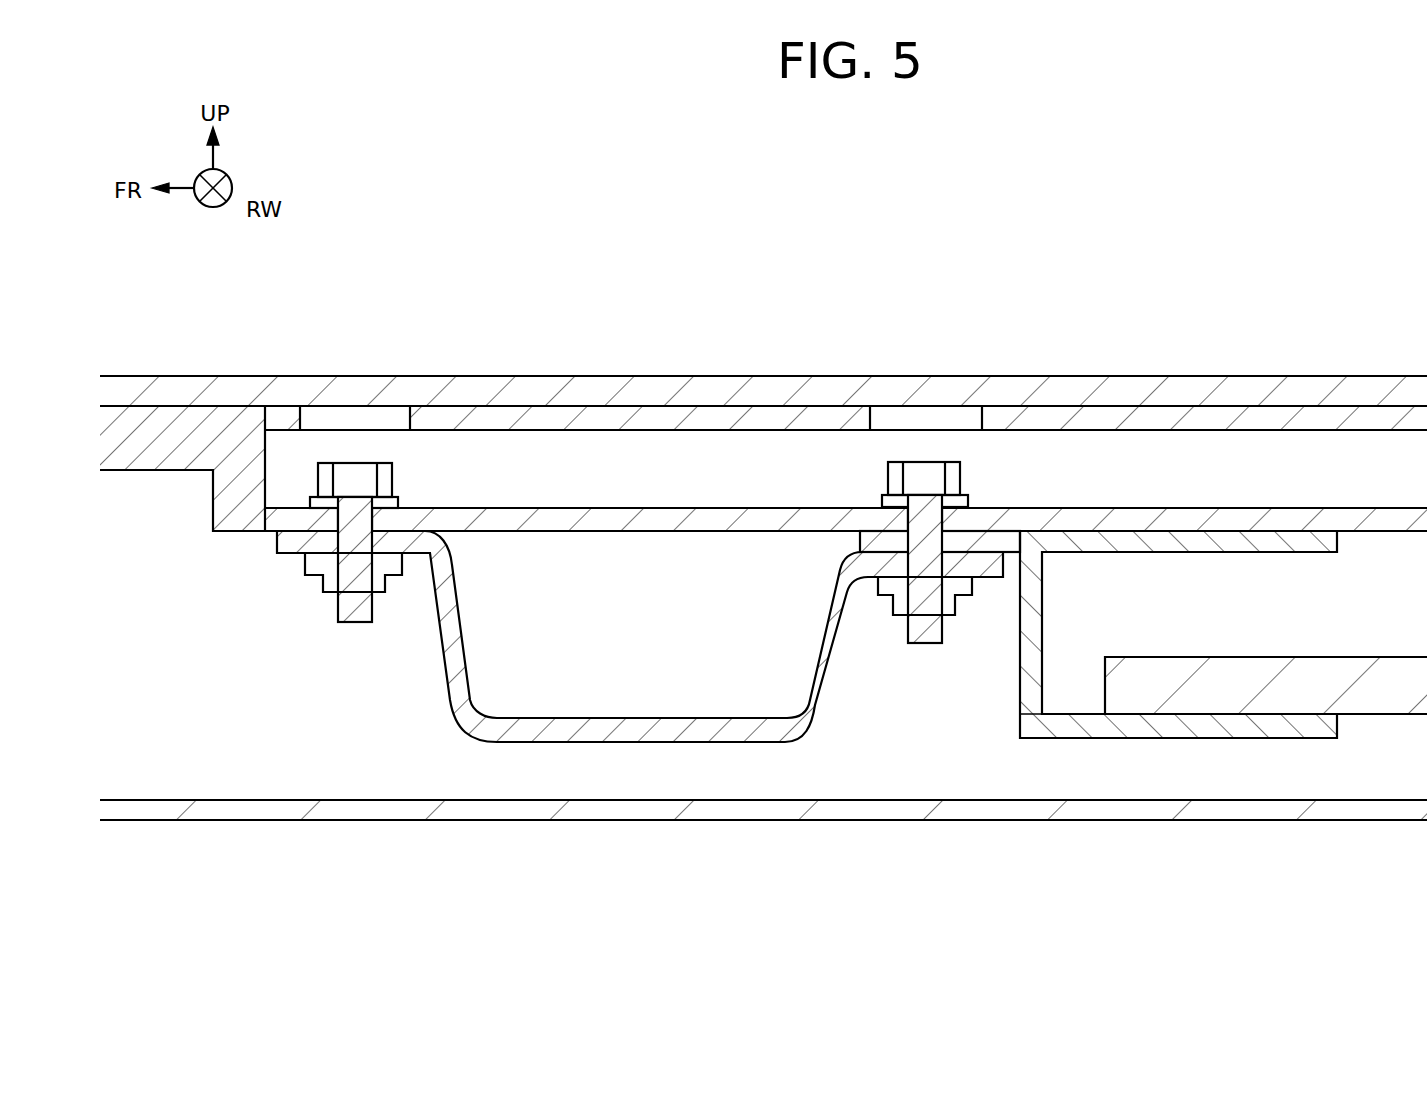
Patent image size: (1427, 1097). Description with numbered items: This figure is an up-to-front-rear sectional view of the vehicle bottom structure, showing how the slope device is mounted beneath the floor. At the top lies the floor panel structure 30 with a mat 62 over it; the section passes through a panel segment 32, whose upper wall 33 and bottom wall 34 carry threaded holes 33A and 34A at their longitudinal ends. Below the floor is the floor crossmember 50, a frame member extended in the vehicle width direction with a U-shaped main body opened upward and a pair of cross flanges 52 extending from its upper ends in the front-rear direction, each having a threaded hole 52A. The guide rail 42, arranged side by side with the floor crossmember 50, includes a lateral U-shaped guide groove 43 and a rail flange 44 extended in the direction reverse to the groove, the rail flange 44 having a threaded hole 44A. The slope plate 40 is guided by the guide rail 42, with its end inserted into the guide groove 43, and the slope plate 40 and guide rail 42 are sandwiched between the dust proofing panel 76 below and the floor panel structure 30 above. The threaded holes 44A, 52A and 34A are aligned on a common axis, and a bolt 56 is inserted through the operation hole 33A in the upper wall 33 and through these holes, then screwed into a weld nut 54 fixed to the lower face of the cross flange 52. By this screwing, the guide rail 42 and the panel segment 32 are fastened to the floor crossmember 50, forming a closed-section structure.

The floor panel structure 30 is at (763, 324).
The panel segment 32 is at (763, 330).
The mat 62 is at (737, 392).
The upper wall 33 is at (846, 367).
The threaded hole 33A is at (412, 418).
The bottom wall 34 is at (846, 419).
The threaded hole 34A is at (358, 520).
The slope plate 40 is at (1315, 672).
The guide rail 42 is at (1168, 756).
The guide groove 43 is at (1178, 660).
The rail flange 44 is at (924, 527).
The threaded hole 44A is at (925, 520).
The floor crossmember 50 is at (688, 605).
The cross flange 52 is at (681, 564).
The threaded hole 52A is at (358, 548).
The weld nut 54 is at (325, 575).
The bolt 56 is at (352, 618).
The dust proofing panel 76 is at (540, 812).